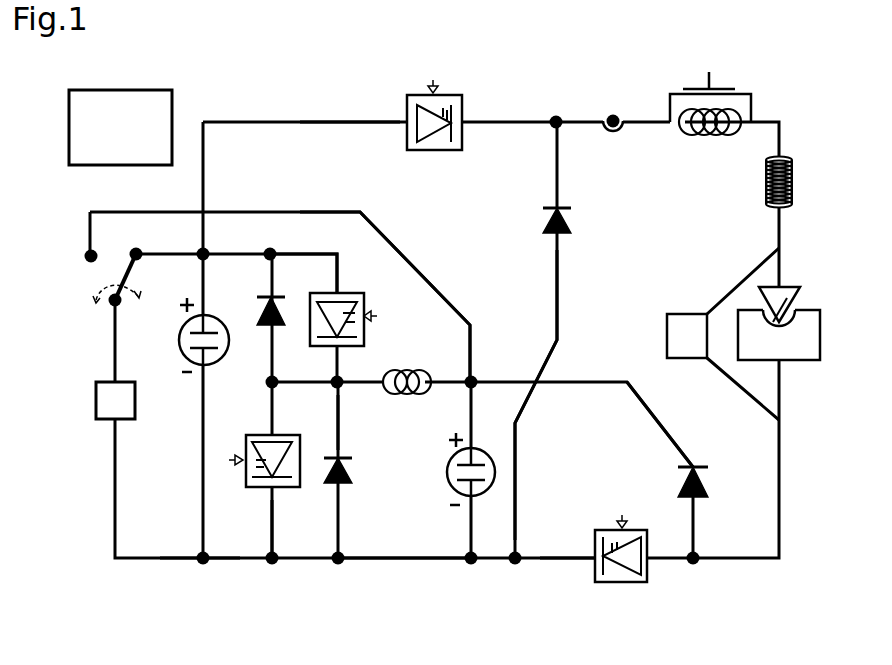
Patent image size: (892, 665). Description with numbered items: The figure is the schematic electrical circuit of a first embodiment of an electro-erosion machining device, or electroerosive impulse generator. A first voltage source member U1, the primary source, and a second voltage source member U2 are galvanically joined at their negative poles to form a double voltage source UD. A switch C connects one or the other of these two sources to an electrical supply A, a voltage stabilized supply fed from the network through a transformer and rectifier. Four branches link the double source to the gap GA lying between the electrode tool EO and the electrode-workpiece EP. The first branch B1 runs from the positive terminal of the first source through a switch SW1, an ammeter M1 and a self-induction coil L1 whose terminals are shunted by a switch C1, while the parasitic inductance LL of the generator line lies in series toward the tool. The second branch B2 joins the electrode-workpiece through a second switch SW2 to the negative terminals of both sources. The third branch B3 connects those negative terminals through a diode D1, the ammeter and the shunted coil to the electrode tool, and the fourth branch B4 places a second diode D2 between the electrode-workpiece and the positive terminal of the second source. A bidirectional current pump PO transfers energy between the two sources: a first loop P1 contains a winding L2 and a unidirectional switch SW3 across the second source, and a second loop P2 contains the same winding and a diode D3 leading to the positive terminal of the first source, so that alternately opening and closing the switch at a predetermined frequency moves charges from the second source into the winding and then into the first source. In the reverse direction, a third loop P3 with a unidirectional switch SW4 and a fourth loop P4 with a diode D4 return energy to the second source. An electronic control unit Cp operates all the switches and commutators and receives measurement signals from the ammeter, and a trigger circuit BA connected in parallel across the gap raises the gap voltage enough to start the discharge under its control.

The electronic control unit Cp is at (120, 127).
The first branch B1 is at (322, 122).
The switch SW1 is at (448, 92).
The ammeter M1 is at (613, 100).
The switch C1 is at (715, 88).
The self-induction coil L1 is at (706, 135).
The parasitic inductance LL is at (794, 186).
The diode D1 is at (565, 222).
The third branch B3 is at (557, 305).
The electrode tool EO is at (782, 298).
The gap GA is at (790, 320).
The electrode-workpiece EP is at (808, 352).
The trigger circuit BA is at (687, 336).
The fourth branch B4 is at (683, 455).
The second diode D2 is at (703, 482).
The second switch SW2 is at (630, 583).
The second branch B2 is at (552, 562).
The current pump PO is at (358, 536).
The first loop P1 is at (274, 522).
The double voltage source UD is at (219, 570).
The diode D4 is at (345, 480).
The fourth loop P4 is at (344, 440).
The second voltage source member U2 is at (456, 494).
The first voltage source member U1 is at (183, 363).
The diode D3 is at (258, 320).
The unidirectional switch SW3 is at (262, 435).
The electrical supply A is at (115, 400).
The switch C is at (120, 268).
The second loop P2 is at (280, 282).
The third loop P3 is at (343, 266).
The unidirectional switch SW4 is at (366, 300).
The winding L2 is at (398, 367).